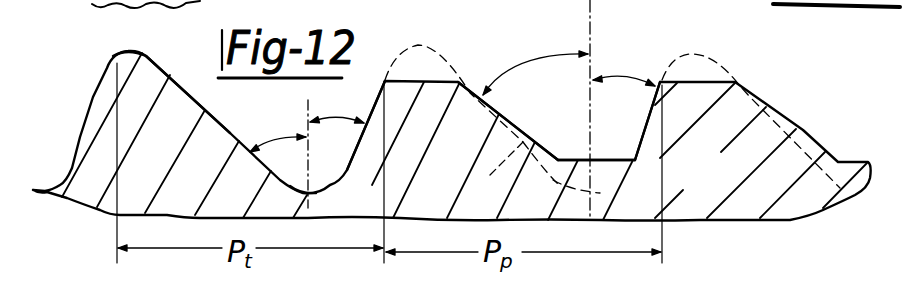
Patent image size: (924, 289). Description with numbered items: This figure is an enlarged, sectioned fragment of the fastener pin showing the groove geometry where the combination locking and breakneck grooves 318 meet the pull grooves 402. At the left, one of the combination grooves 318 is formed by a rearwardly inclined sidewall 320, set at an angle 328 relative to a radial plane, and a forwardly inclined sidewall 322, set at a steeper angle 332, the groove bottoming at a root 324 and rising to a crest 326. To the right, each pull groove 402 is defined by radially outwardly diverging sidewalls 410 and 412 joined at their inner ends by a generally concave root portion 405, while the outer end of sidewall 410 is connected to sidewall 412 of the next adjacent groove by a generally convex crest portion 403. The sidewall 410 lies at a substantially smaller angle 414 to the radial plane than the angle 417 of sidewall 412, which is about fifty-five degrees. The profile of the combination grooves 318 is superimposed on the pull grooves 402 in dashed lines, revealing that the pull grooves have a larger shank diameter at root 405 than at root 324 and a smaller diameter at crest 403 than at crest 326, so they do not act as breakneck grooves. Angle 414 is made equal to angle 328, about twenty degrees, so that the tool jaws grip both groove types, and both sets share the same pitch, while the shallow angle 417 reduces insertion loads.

The combination locking and breakneck grooves 318 is at (197, 60).
The sidewall 320 is at (358, 132).
The sidewall 322 is at (201, 106).
The root 324 is at (319, 186).
The crest 326 is at (127, 52).
The angle 328 is at (334, 127).
The angle 332 is at (276, 140).
The pull grooves 402 is at (607, 30).
The crest portion 403 is at (413, 81).
The root portion 405 is at (565, 158).
The sidewall 410 is at (653, 110).
The sidewall 412 is at (492, 107).
The angle 414 is at (647, 72).
The angle 417 is at (552, 50).